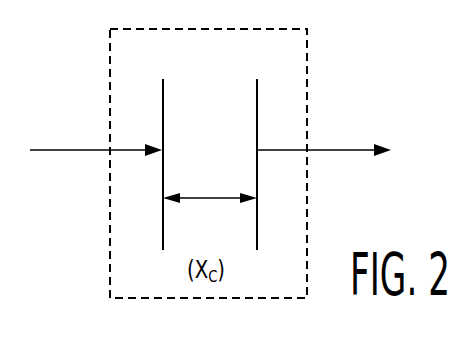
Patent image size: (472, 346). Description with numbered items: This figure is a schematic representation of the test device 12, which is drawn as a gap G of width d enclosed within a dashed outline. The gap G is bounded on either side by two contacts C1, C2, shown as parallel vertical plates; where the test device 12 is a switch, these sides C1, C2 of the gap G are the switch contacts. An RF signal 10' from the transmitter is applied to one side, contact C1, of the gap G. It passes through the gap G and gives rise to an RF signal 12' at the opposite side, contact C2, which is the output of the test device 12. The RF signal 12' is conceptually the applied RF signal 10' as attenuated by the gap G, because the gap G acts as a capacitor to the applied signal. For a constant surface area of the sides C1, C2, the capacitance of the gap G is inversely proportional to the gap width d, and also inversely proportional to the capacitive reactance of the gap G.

The test device 12 is at (167, 163).
The contact C1 is at (162, 98).
The contact C2 is at (258, 97).
The gap G is at (207, 97).
The RF signal 10' is at (96, 137).
The RF signal 12' is at (324, 137).
The gap width d is at (210, 215).